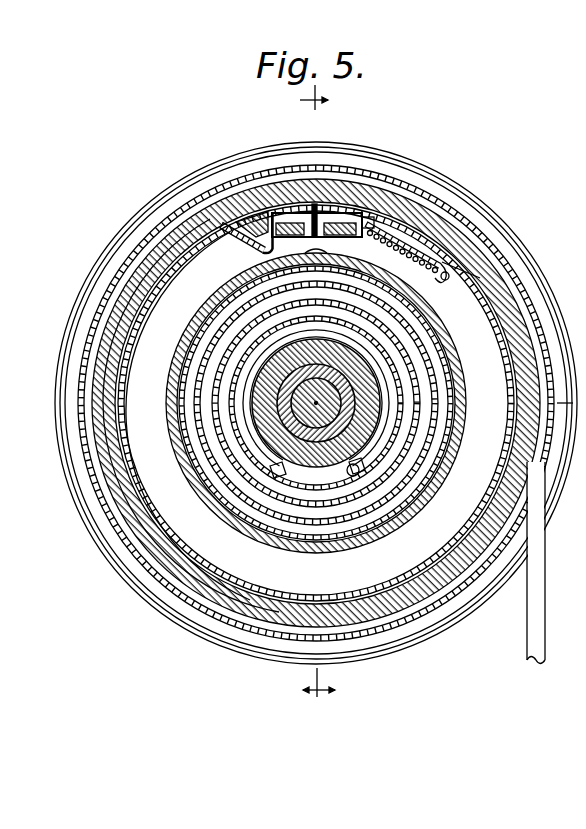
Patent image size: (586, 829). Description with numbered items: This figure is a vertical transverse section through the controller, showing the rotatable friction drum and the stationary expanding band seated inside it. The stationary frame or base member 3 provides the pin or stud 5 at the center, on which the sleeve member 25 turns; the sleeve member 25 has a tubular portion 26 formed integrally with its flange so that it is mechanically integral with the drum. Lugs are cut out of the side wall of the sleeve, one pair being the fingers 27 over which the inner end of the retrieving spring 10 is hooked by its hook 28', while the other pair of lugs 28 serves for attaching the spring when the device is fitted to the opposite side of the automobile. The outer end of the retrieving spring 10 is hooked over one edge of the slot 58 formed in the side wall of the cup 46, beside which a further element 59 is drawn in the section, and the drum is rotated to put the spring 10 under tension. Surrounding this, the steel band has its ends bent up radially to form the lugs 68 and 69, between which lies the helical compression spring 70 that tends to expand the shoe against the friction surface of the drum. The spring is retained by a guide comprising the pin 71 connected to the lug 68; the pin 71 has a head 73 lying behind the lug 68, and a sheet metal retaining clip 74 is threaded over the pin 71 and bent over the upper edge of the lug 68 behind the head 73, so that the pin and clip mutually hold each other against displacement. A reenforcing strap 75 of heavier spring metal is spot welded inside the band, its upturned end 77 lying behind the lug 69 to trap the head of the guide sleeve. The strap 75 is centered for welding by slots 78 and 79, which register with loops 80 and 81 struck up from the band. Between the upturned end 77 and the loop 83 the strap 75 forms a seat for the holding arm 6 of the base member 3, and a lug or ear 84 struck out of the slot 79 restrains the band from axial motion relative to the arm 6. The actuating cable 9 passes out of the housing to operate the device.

The frame or base member 3 is at (233, 193).
The loop 83 is at (255, 203).
The lug or ear 84 is at (308, 207).
The slot 78 is at (133, 330).
The loop 80 is at (140, 328).
The loop 81 is at (330, 207).
The actuating or holding arm 6 is at (300, 208).
The cup 46 is at (327, 550).
The retrieving spring 10 is at (207, 439).
The lugs 28 is at (298, 444).
The hook 28' is at (340, 473).
The lugs or fingers 27 is at (362, 476).
The tubular portion 26 is at (270, 362).
The sleeve member 25 is at (316, 382).
The pin or stud 5 is at (280, 400).
The upturned end 77 is at (378, 220).
The slot 58 is at (310, 255).
The packing block 59 is at (323, 256).
The slot 79 is at (347, 210).
The reenforcing strap 75 is at (211, 246).
The upturned end or lug 69 is at (410, 237).
The helical compression spring 70 is at (435, 250).
The pin 71 is at (447, 257).
The upturned end or lug 68 is at (450, 267).
The head 73 is at (457, 268).
The retaining clip 74 is at (483, 270).
The actuating cable 9 is at (541, 603).